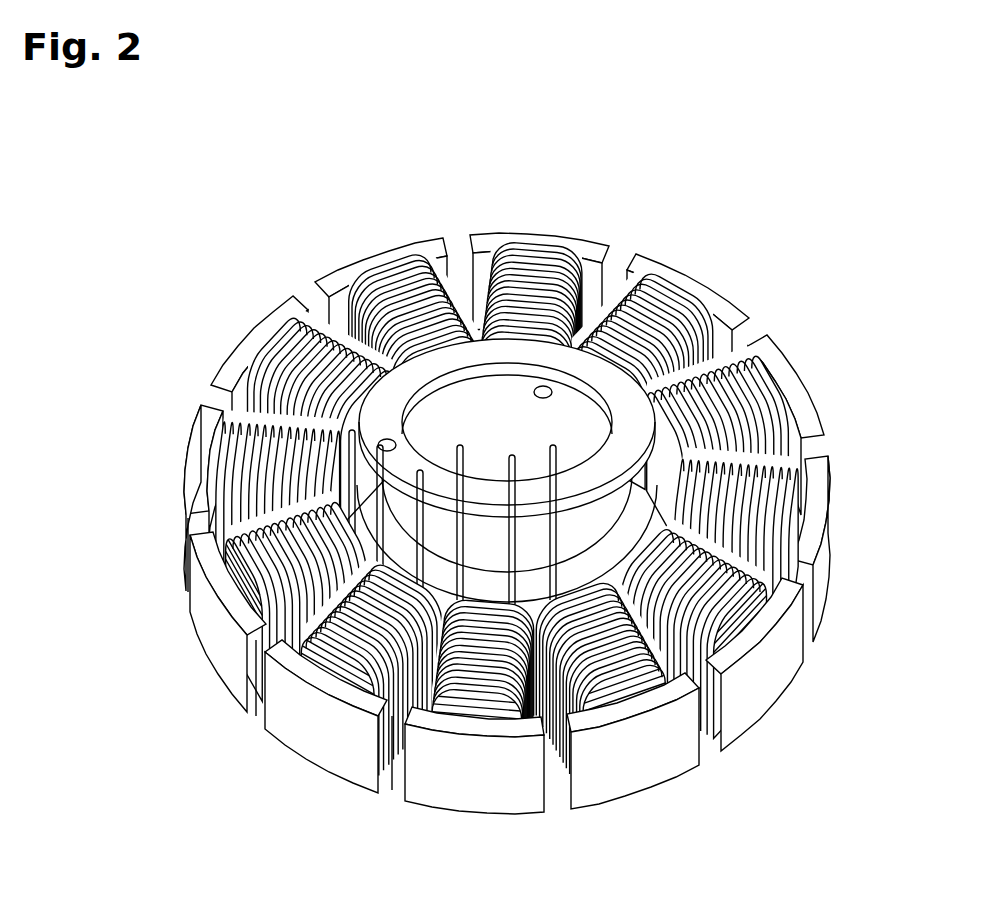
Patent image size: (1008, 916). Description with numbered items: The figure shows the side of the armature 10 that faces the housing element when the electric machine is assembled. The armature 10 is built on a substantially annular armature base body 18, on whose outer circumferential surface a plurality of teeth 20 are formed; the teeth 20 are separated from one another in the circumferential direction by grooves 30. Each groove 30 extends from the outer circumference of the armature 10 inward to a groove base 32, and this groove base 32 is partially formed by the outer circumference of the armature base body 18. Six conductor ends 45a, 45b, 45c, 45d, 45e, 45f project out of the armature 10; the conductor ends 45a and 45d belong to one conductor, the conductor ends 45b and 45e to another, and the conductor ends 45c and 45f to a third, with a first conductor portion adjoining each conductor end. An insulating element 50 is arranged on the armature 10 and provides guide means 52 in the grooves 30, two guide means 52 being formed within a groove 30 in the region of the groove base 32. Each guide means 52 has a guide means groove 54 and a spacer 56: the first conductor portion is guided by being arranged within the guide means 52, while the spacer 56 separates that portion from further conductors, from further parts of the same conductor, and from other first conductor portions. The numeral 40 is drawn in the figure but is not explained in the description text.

The armature 10 is at (486, 458).
The armature base body 18 is at (725, 660).
The teeth 20 is at (588, 232).
The grooves 30 is at (457, 277).
The groove base 32 is at (506, 300).
The yoke segment plate 40 is at (392, 245).
The conductor end 45a is at (597, 730).
The conductor end 45b is at (478, 730).
The conductor end 45c is at (380, 740).
The conductor end 45d is at (255, 690).
The conductor end 45e is at (231, 623).
The conductor end 45f is at (215, 477).
The insulating element 50 is at (785, 410).
The guide means 52 is at (350, 745).
The guide means groove 54 is at (730, 297).
The spacer 56 is at (633, 270).